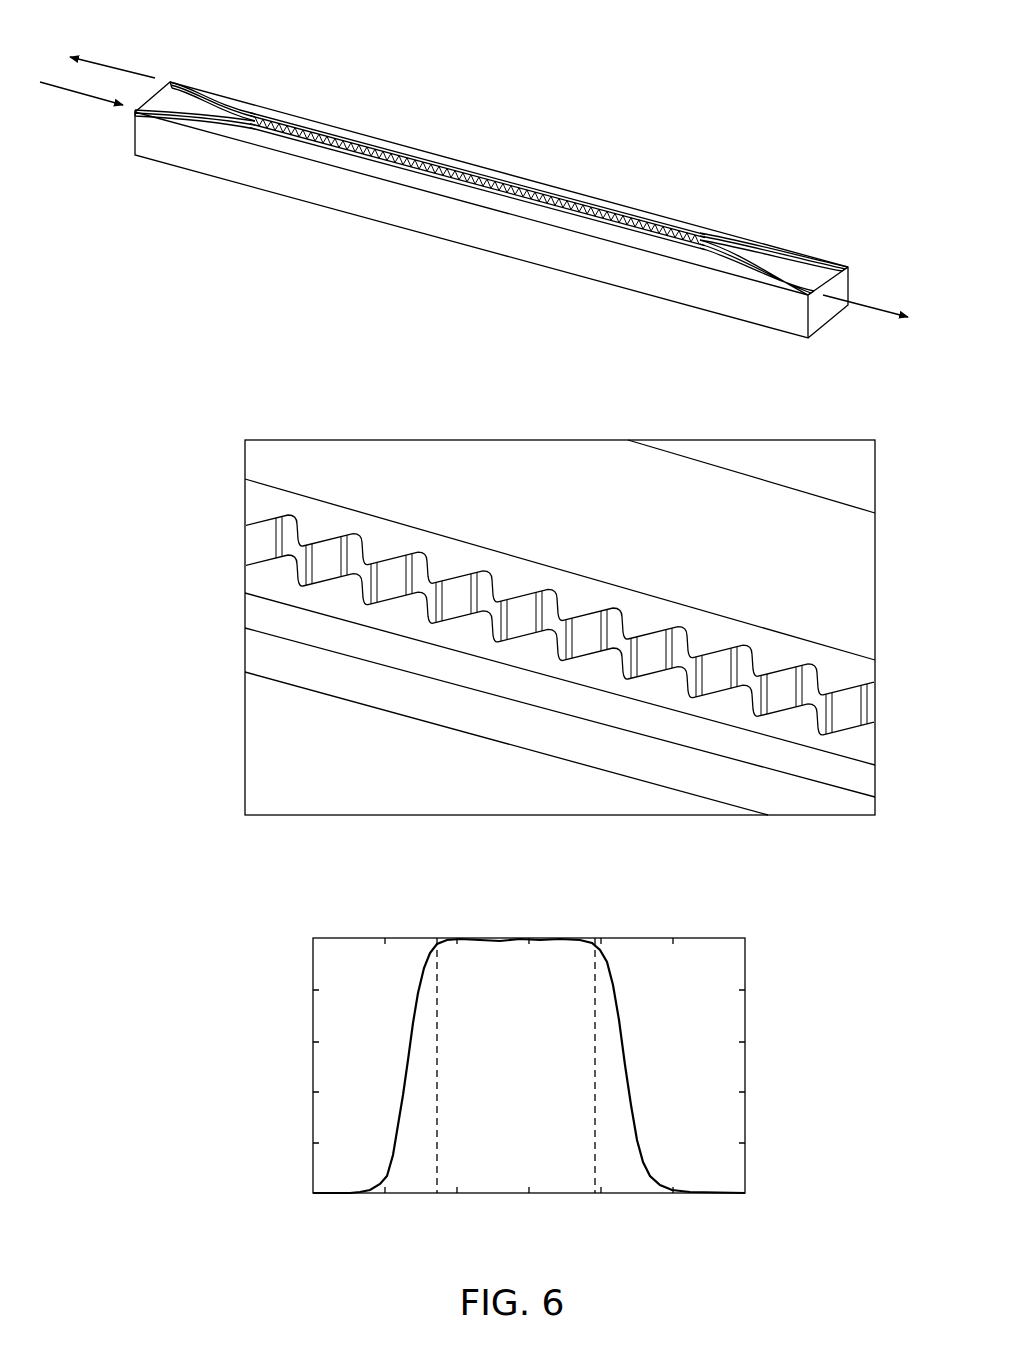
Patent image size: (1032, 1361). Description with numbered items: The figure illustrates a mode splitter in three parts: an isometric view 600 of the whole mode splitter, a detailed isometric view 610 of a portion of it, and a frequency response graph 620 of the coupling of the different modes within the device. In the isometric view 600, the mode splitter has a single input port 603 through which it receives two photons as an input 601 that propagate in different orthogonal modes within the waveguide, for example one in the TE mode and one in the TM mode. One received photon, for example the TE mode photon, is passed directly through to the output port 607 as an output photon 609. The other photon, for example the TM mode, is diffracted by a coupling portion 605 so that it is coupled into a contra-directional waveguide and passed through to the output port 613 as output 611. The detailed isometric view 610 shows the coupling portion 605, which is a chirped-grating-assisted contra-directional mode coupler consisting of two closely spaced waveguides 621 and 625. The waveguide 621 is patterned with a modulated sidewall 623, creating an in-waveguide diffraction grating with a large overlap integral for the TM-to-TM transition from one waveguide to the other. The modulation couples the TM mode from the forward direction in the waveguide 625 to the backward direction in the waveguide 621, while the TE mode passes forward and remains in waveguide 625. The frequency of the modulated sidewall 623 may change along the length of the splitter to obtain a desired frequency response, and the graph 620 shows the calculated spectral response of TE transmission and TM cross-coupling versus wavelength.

The isometric view 600 is at (621, 108).
The input 601 is at (72, 92).
The input port 603 is at (177, 117).
The coupling portion 605 is at (557, 212).
The output port 607 is at (767, 284).
The output photon 609 is at (867, 310).
The detailed isometric view 610 is at (497, 609).
The output 611 is at (137, 70).
The output port 613 is at (201, 92).
The frequency response graph 620 is at (237, 945).
The waveguide 621 is at (540, 560).
The modulated sidewall 623 is at (245, 547).
The waveguide 625 is at (522, 738).